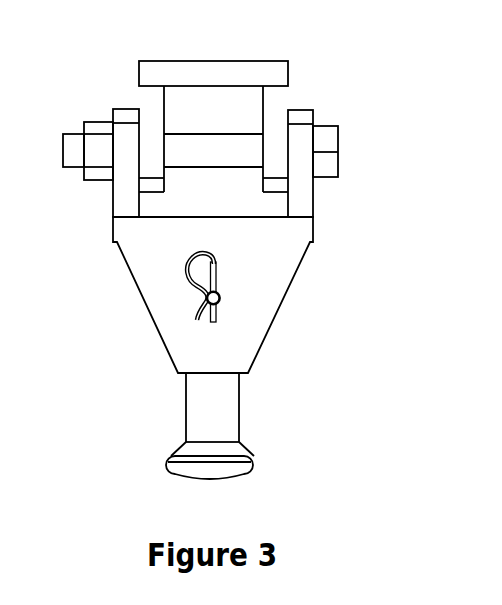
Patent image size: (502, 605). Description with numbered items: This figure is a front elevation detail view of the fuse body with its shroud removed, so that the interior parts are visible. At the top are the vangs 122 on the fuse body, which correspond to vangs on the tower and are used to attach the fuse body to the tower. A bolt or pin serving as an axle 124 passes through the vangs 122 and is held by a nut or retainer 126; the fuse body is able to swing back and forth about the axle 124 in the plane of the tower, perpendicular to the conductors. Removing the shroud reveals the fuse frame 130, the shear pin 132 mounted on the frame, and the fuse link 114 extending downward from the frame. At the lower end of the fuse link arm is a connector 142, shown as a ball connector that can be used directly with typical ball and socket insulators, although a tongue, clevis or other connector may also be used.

The vang 122 is at (309, 108).
The axle 124 is at (196, 168).
The retainer 126 is at (328, 137).
The fuse frame 130 is at (260, 236).
The shear pin 132 is at (221, 298).
The fuse link 114 is at (230, 393).
The connector 142 is at (232, 466).